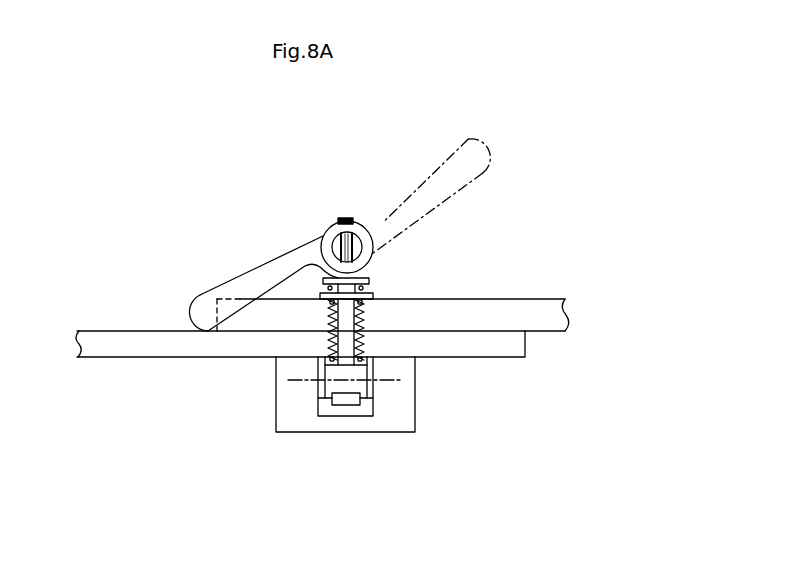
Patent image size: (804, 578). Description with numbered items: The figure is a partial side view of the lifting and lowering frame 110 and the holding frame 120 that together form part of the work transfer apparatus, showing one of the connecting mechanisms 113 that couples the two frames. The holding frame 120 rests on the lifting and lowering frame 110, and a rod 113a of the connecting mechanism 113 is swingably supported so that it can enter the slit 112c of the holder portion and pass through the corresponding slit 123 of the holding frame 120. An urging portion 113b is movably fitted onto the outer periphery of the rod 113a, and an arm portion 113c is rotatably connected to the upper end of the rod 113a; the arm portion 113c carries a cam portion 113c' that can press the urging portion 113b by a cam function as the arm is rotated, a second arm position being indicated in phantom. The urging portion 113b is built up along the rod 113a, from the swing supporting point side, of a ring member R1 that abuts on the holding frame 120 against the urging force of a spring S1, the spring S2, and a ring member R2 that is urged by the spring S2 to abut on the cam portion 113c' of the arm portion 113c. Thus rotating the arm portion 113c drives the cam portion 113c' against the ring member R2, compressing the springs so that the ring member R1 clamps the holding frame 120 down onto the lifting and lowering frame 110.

The lifting and lowering frame 110 is at (135, 357).
The holding frame 120 is at (543, 299).
The connecting mechanism 113 is at (338, 206).
The rod 113a is at (300, 389).
The urging portion 113b is at (234, 416).
The arm portion 113c is at (338, 206).
The cam portion 113c' is at (290, 221).
The slit 123 is at (321, 299).
The slit 112c is at (349, 345).
The ring member R2 is at (326, 309).
The spring S2 is at (330, 322).
The ring member R1 is at (331, 336).
The spring S1 is at (334, 350).